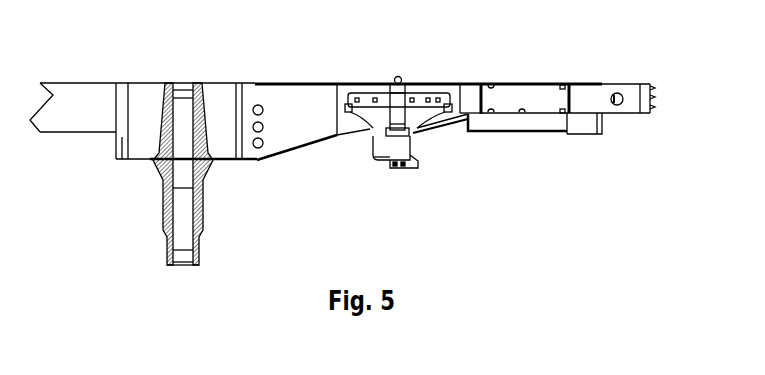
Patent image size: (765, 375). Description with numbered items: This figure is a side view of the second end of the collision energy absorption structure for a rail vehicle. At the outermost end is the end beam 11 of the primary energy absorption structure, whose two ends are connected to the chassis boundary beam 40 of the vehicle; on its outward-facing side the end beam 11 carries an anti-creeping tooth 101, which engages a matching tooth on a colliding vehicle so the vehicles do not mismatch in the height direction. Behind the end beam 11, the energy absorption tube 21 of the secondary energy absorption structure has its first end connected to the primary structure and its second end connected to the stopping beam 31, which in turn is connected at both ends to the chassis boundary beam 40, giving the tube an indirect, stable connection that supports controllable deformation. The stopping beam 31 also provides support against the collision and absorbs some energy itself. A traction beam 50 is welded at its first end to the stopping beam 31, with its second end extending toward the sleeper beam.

The chassis boundary beam 40 is at (94, 100).
The traction beam 50 is at (424, 83).
The stopping beam 31 is at (477, 83).
The energy absorption tube 21 is at (532, 103).
The end beam 11 is at (583, 98).
The anti-creeping tooth 101 is at (648, 77).